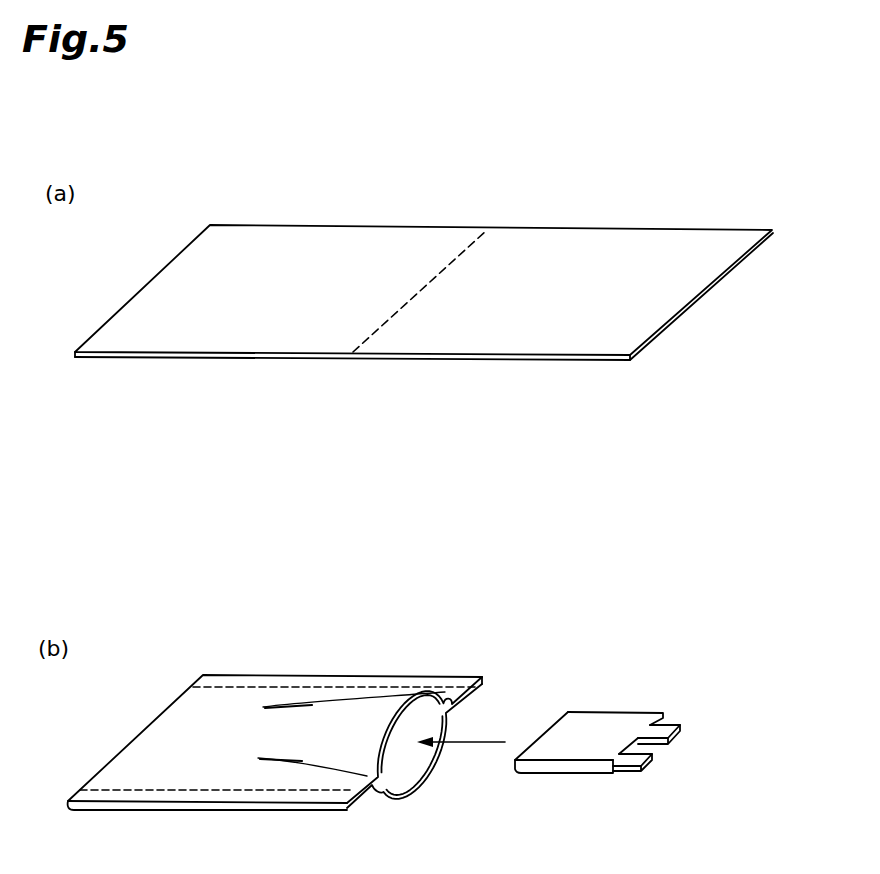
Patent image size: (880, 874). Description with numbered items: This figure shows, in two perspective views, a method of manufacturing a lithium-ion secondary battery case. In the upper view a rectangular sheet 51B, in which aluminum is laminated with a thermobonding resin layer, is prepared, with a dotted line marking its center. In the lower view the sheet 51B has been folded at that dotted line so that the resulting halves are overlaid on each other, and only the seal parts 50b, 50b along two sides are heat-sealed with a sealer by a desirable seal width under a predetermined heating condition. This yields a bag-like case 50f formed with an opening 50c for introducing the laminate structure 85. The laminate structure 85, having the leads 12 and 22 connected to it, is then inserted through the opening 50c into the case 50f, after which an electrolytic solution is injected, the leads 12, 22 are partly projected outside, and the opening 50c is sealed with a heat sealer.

The rectangular sheet 51B is at (323, 268).
The bag-like case 50f is at (173, 666).
The seal parts 50b is at (262, 681).
The opening 50c is at (452, 692).
The laminate structure 85 is at (598, 725).
The lead 12 is at (665, 717).
The lead 22 is at (631, 772).